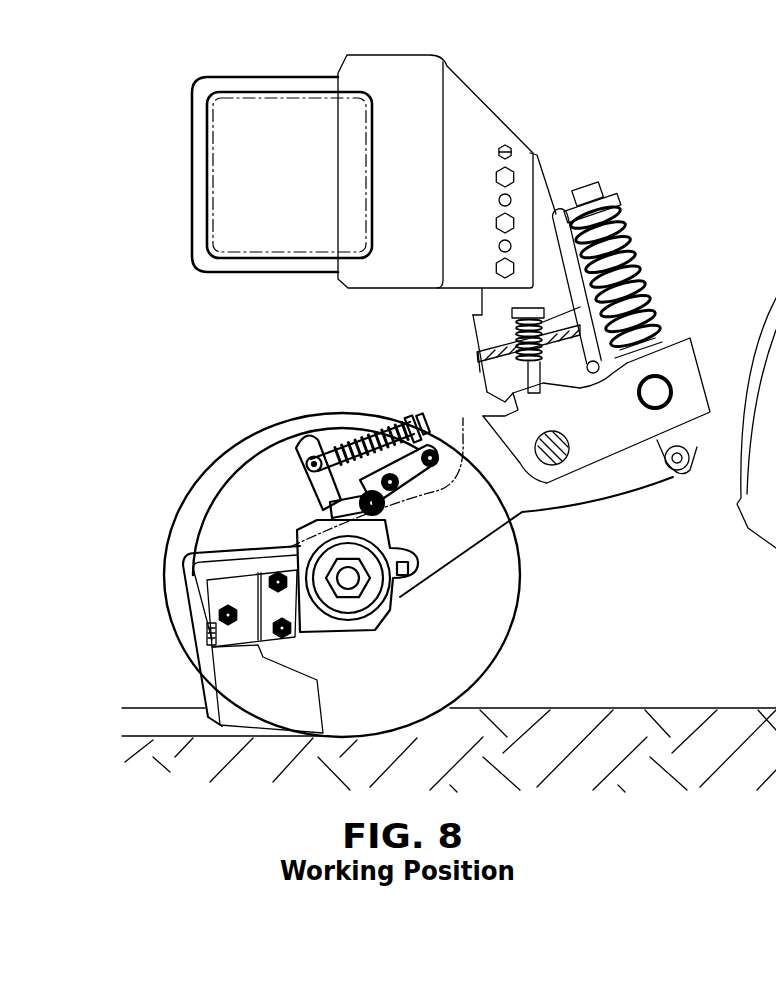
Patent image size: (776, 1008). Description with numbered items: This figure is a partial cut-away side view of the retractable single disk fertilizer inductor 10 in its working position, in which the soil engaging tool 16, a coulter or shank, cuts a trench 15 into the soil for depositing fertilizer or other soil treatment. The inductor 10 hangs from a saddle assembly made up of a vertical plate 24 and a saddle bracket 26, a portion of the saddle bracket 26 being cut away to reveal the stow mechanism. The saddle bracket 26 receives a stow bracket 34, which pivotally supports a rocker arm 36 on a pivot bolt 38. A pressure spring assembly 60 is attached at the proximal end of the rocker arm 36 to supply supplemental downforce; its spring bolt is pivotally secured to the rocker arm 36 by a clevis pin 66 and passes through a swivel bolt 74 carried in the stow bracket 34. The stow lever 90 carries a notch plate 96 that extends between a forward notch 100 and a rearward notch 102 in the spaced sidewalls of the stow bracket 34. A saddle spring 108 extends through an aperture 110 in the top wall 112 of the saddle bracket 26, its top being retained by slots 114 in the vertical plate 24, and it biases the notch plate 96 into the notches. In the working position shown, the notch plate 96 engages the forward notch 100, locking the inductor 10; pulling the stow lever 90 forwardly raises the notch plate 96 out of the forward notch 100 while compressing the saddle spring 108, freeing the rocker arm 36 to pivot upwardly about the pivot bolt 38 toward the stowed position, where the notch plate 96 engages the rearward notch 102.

The retractable single disk fertilizer inductor 10 is at (640, 137).
The trench 15 is at (165, 720).
The soil engaging tool 16 is at (539, 622).
The vertical plate 24 is at (482, 310).
The saddle bracket 26 is at (478, 364).
The stow bracket 34 is at (677, 355).
The rocker arm 36 is at (517, 508).
The pivot bolt 38 is at (560, 461).
The pressure spring assembly 60 is at (636, 211).
The clevis pin 66 is at (687, 472).
The swivel bolt 74 is at (657, 392).
The stow lever 90 is at (553, 216).
The notch plate 96 is at (633, 357).
The forward notch 100 is at (553, 398).
The rearward notch 102 is at (483, 388).
The saddle spring 108 is at (542, 328).
The aperture 110 is at (510, 330).
The top wall 112 is at (477, 343).
The slots 114 is at (544, 316).